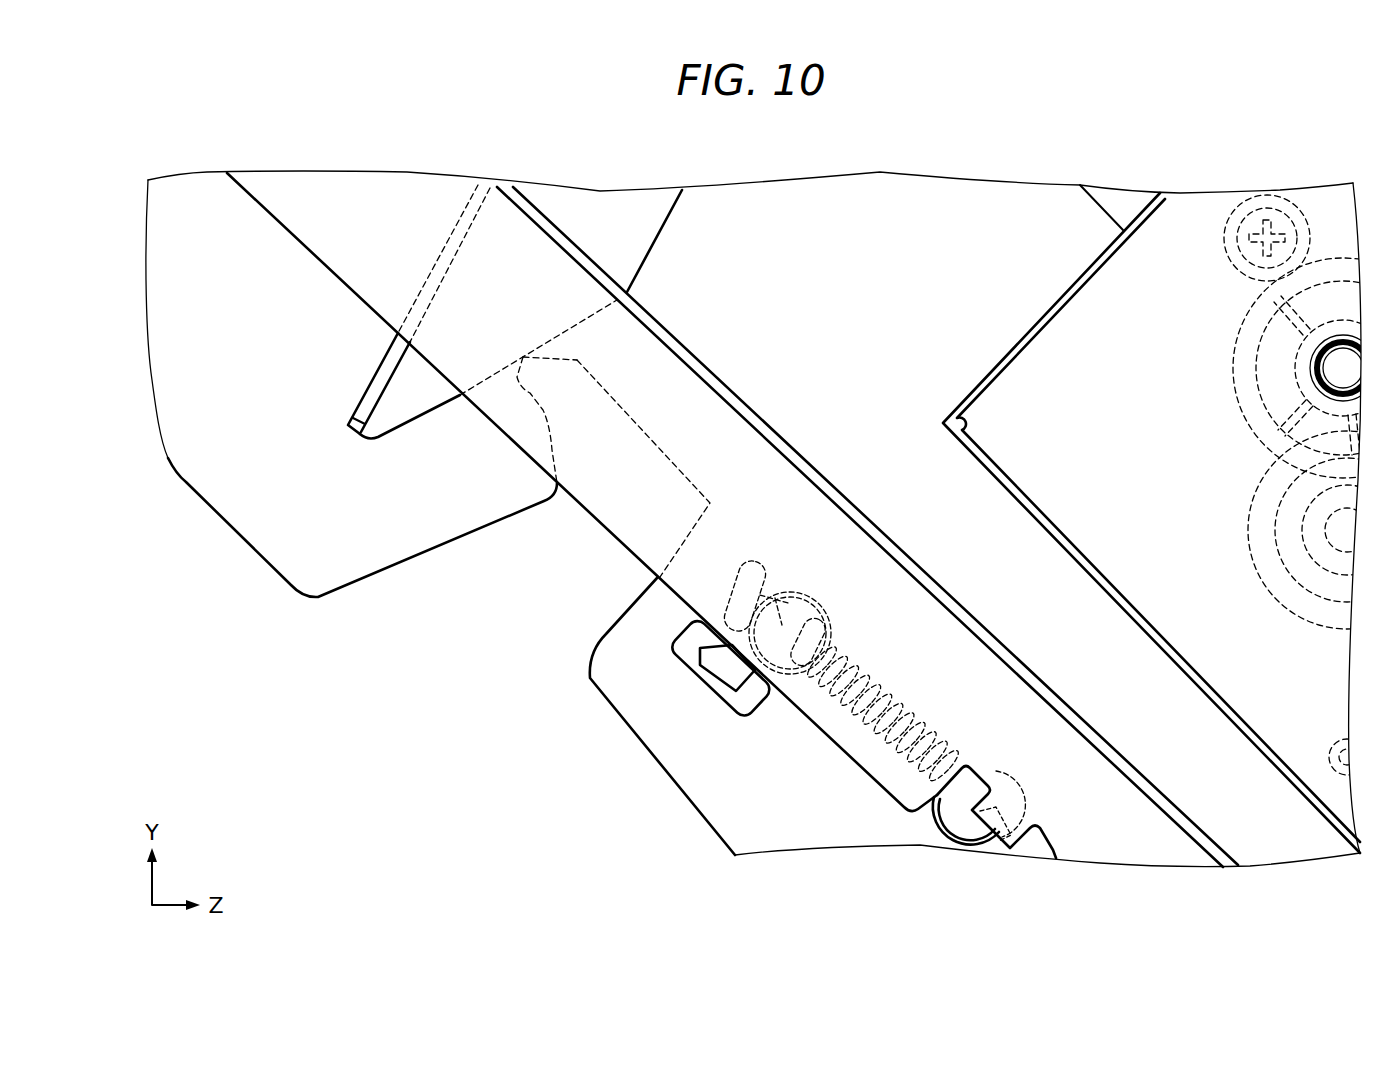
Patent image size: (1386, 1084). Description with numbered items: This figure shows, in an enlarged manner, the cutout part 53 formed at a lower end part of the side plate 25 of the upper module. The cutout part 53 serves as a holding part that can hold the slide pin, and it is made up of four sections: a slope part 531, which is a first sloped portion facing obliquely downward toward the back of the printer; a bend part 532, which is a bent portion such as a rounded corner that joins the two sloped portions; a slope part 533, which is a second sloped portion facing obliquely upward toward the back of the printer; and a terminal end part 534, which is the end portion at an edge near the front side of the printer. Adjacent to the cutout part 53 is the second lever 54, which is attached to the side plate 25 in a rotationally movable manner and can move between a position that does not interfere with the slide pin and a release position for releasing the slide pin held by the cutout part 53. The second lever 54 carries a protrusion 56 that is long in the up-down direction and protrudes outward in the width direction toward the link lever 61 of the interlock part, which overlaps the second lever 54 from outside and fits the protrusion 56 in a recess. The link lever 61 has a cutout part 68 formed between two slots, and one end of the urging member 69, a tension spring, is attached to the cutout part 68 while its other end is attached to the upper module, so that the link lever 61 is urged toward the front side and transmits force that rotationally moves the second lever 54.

The side plate 25 is at (887, 190).
The cutout part 53 is at (500, 575).
The slope part 531 is at (424, 558).
The bend part 532 is at (553, 495).
The slope part 533 is at (552, 450).
The terminal end part 534 is at (565, 362).
The second lever 54 is at (408, 396).
The protrusion 56 is at (390, 351).
The link lever 61 is at (1138, 847).
The cutout part 68 is at (990, 835).
The urging member 69 is at (868, 750).